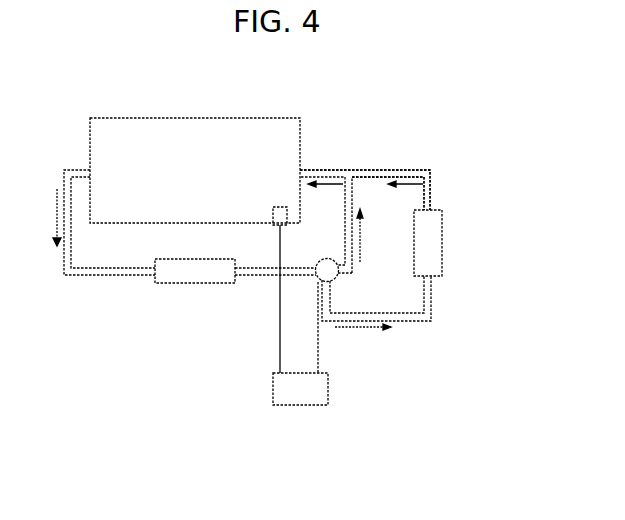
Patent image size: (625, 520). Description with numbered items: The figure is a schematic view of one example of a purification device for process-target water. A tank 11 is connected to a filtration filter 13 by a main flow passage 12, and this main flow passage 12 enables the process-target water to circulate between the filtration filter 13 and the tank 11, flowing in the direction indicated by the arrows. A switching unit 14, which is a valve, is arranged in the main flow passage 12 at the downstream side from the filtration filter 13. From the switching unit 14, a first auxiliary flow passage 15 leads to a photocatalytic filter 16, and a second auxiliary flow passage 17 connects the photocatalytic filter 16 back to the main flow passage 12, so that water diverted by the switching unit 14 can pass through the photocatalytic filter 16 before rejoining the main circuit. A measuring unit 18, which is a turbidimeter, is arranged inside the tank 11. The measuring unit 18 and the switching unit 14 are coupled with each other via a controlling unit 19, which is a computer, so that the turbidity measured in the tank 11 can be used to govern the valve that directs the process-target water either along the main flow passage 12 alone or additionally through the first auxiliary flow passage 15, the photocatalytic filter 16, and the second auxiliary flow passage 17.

The tank 11 is at (195, 117).
The main flow passage 12 is at (119, 276).
The filtration filter 13 is at (193, 284).
The switching unit 14 is at (334, 281).
The first auxiliary flow passage 15 is at (400, 322).
The photocatalytic filter 16 is at (443, 240).
The second auxiliary flow passage 17 is at (433, 172).
The measuring unit 18 is at (288, 210).
The controlling unit 19 is at (300, 405).